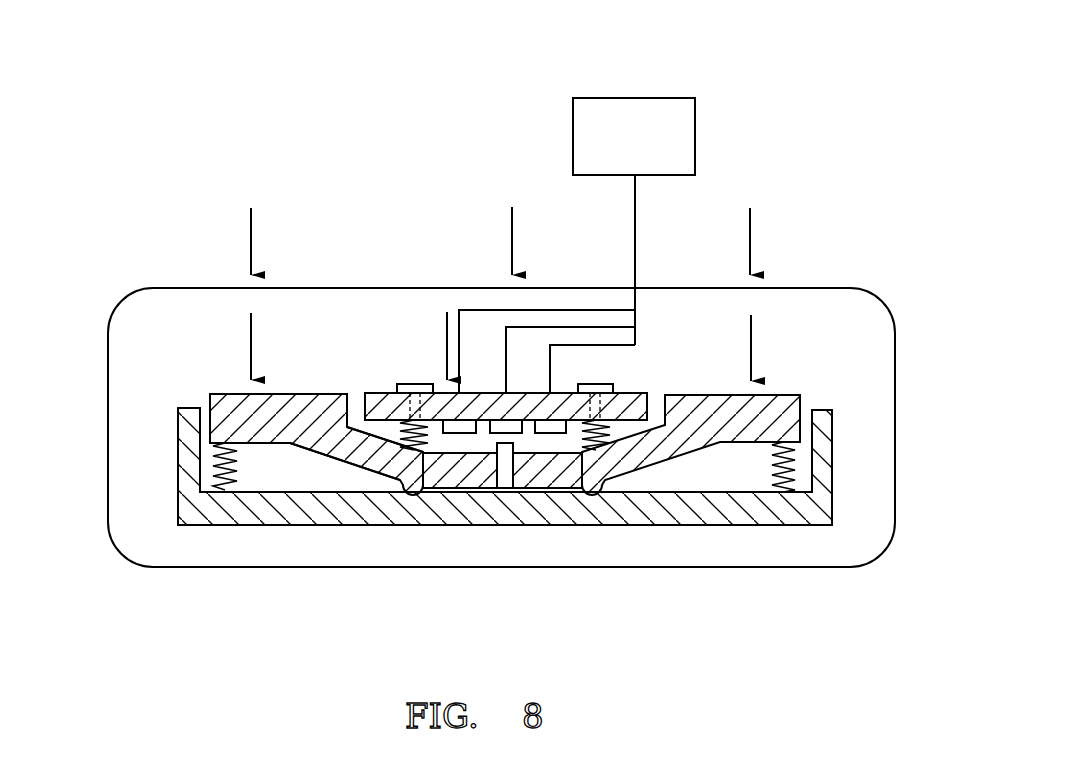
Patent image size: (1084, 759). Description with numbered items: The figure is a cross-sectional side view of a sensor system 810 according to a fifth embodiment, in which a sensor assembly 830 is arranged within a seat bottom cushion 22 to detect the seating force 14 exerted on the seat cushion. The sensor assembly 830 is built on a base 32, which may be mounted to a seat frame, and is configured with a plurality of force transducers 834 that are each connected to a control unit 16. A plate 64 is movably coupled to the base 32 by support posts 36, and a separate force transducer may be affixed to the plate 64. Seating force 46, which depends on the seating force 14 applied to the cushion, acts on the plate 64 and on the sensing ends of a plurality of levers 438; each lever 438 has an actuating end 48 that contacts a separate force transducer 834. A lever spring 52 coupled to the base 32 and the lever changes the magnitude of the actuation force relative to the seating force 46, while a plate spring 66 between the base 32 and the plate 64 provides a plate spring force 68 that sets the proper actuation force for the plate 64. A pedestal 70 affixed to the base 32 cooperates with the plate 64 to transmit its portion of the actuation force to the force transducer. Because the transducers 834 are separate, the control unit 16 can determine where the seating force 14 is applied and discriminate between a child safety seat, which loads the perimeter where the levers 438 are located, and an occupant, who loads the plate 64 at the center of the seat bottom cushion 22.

The sensor system 810 is at (377, 148).
The control unit 16 is at (573, 110).
The seating force 14 is at (249, 228).
The seat bottom cushion 22 is at (331, 292).
The seating force 46 is at (250, 362).
The sensor assembly 830 is at (679, 350).
The support posts 36 is at (418, 385).
The plate 64 is at (383, 393).
The base 32 is at (222, 522).
The levers 438 is at (320, 432).
The plate spring 66 is at (410, 447).
The lever spring 52 is at (217, 468).
The plate spring force 68 is at (438, 438).
The actuating end 48 is at (454, 452).
The force transducers 834 is at (492, 433).
The pedestal 70 is at (507, 470).